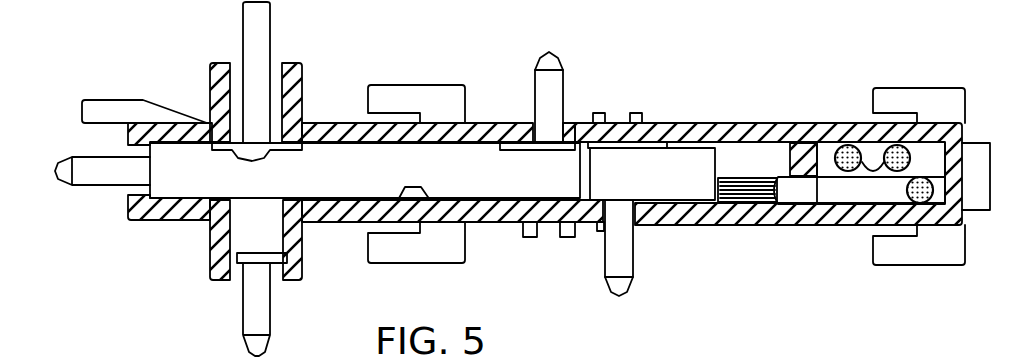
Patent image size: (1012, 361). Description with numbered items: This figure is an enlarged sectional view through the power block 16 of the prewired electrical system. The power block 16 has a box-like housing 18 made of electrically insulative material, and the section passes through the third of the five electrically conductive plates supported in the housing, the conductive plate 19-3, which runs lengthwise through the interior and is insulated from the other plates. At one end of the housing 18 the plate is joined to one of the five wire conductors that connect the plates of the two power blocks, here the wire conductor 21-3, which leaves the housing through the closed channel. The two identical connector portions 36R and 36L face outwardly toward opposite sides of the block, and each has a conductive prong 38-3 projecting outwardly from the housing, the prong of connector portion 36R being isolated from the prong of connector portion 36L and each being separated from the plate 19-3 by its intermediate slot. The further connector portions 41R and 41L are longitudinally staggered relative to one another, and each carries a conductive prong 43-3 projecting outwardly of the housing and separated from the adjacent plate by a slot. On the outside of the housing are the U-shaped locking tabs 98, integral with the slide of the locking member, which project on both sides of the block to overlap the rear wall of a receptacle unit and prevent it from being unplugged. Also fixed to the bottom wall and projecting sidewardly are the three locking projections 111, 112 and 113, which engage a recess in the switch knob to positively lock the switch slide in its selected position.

The power block 16 is at (776, 116).
The box-like housing 18 is at (783, 213).
The conductive plate 19-3 is at (347, 178).
The wire conductor 21-3 is at (858, 198).
The connector portion 36R is at (284, 46).
The connector portion 36L is at (228, 293).
The conductive prong 38-3 is at (250, 48).
The connector portion 41R is at (572, 56).
The connector portion 41L is at (642, 292).
The conductive prong 43-3 is at (553, 90).
The locking tab 98 is at (428, 95).
The locking projection 111 is at (572, 117).
The locking projection 112 is at (607, 114).
The locking projection 113 is at (645, 122).